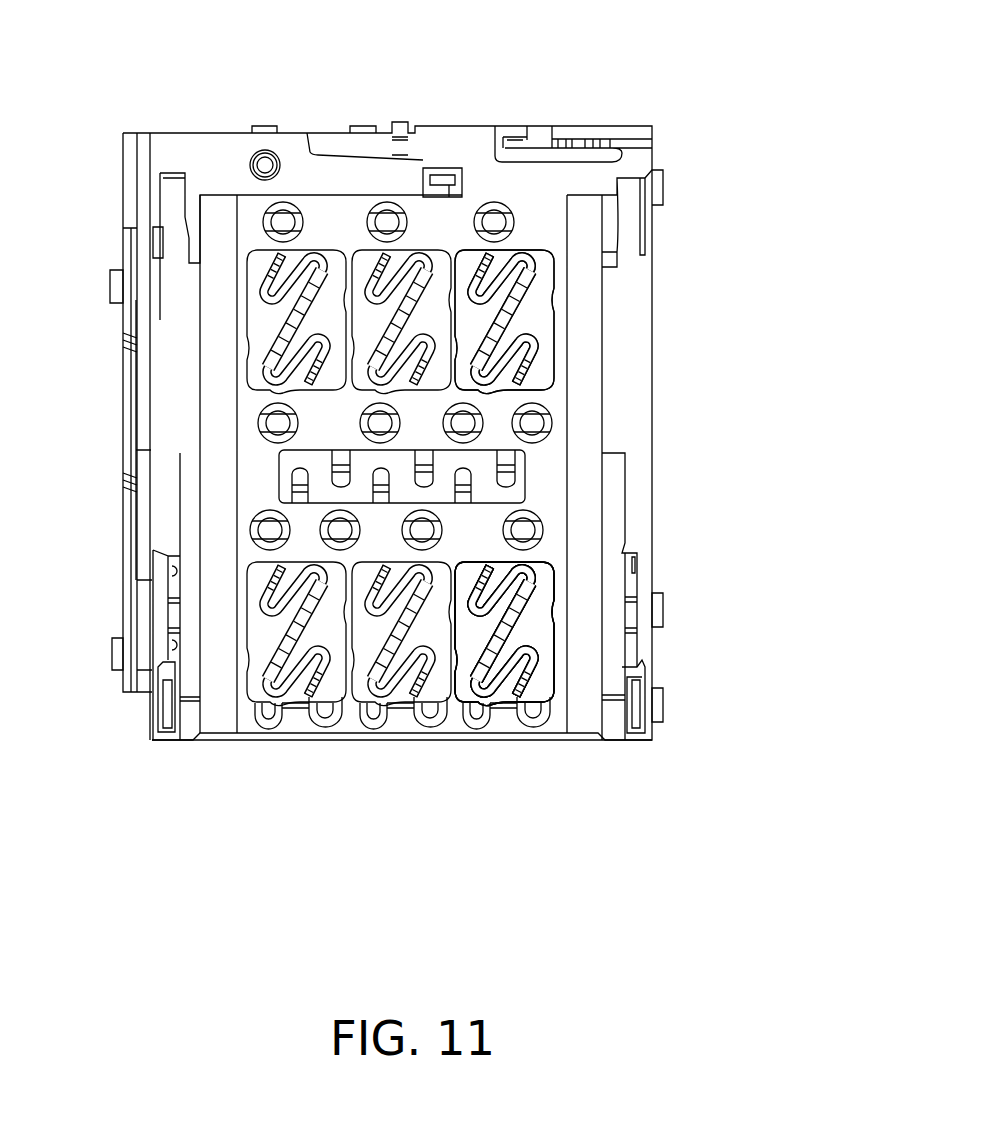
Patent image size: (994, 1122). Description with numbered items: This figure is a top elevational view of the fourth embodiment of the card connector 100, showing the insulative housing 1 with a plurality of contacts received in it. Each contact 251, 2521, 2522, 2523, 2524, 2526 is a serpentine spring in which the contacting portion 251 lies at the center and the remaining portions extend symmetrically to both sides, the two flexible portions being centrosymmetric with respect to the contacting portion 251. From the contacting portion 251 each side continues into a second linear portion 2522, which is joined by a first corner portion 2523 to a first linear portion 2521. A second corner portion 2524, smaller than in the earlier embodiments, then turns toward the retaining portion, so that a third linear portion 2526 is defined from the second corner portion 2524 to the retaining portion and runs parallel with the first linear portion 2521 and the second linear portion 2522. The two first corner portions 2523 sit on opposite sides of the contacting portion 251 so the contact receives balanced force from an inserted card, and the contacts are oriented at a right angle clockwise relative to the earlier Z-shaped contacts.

The card connector 100 is at (418, 433).
The insulative housing 1 is at (248, 408).
The contacting portion 251 is at (507, 630).
The first linear portion 2521 is at (510, 667).
The second linear portion 2522 is at (493, 655).
The first corner portion 2523 is at (495, 363).
The second corner portion 2524 is at (480, 292).
The third linear portion 2526 is at (532, 677).